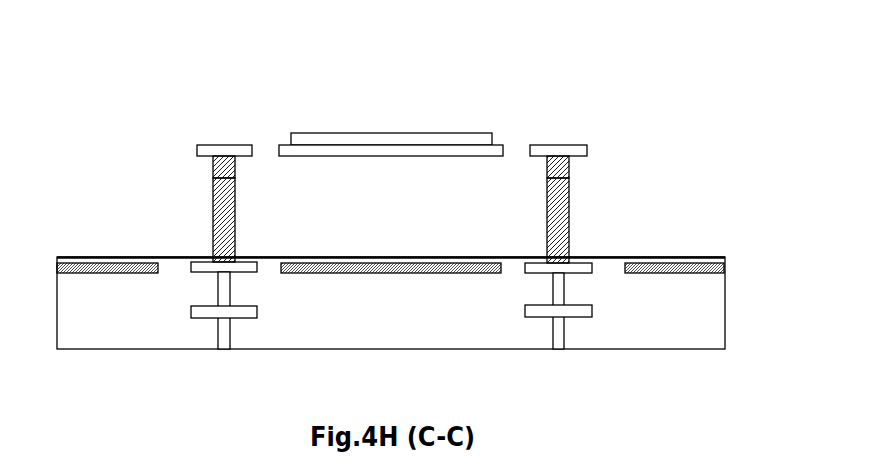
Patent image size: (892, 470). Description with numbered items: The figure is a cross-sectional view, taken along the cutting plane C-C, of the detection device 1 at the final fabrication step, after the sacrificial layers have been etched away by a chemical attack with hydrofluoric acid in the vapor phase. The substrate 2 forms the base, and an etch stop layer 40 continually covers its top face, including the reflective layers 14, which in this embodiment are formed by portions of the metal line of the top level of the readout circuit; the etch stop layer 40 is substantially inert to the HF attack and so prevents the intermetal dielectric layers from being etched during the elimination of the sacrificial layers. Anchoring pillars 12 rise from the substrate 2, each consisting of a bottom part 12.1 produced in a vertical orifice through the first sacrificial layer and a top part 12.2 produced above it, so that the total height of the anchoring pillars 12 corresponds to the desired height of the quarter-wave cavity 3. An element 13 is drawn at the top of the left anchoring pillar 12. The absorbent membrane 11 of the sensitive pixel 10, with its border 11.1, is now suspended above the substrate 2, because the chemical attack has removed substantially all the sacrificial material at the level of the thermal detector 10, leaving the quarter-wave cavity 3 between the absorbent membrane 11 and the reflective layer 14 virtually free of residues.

The detection device 1 is at (74, 80).
The substrate 2 is at (727, 307).
The quarter-wave cavity 3 is at (346, 219).
The sensitive pixel 10 is at (442, 97).
The absorbent membrane 11 is at (492, 127).
The border of the absorbent membrane 11.1 is at (505, 150).
The anchoring pillar 12 is at (367, 178).
The bottom part of the anchoring pillar 12.1 is at (213, 218).
The top part of the anchoring pillar 12.2 is at (212, 167).
The pillar cap 13 is at (239, 143).
The reflective layer 14 is at (86, 275).
The etch stop layer 40 is at (727, 258).